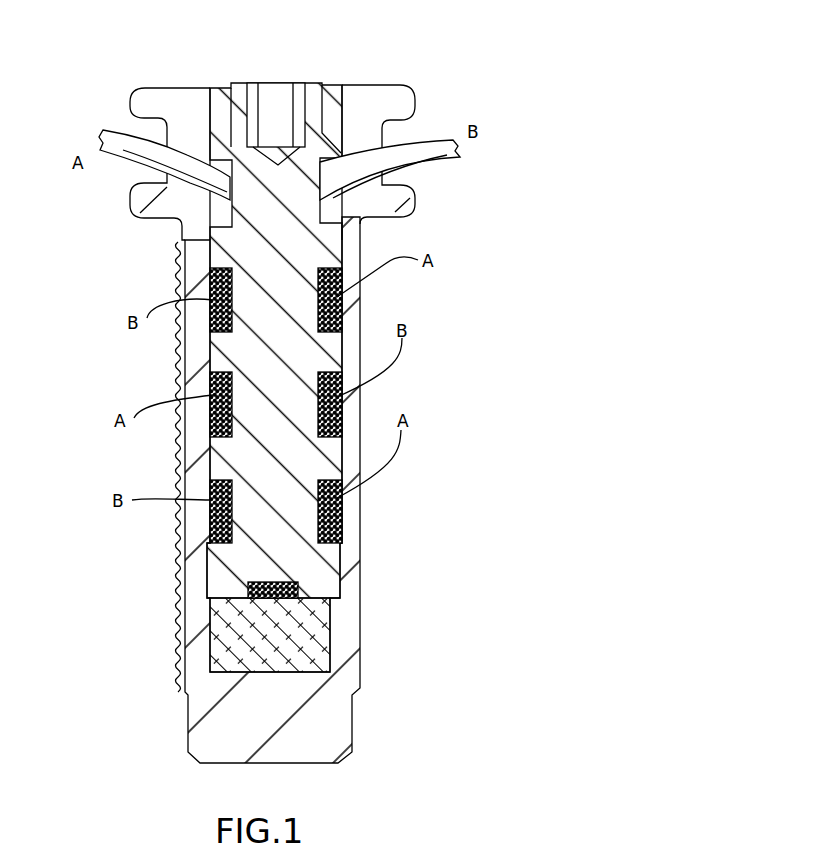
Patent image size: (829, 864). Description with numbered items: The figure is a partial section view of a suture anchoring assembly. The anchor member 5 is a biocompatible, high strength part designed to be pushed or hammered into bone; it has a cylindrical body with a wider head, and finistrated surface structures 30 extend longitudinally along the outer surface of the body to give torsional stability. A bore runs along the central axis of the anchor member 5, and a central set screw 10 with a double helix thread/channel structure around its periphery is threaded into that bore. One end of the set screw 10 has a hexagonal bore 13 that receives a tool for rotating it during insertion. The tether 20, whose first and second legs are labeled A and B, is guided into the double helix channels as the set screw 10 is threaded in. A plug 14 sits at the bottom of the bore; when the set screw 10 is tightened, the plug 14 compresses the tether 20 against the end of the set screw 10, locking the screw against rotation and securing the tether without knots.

The anchor member 5 is at (173, 87).
The set screw 10 is at (320, 85).
The hexagonal bore 13 is at (288, 111).
The plug 14 is at (338, 598).
The tether 20 is at (433, 163).
The finistrated surface structures 30 is at (177, 555).